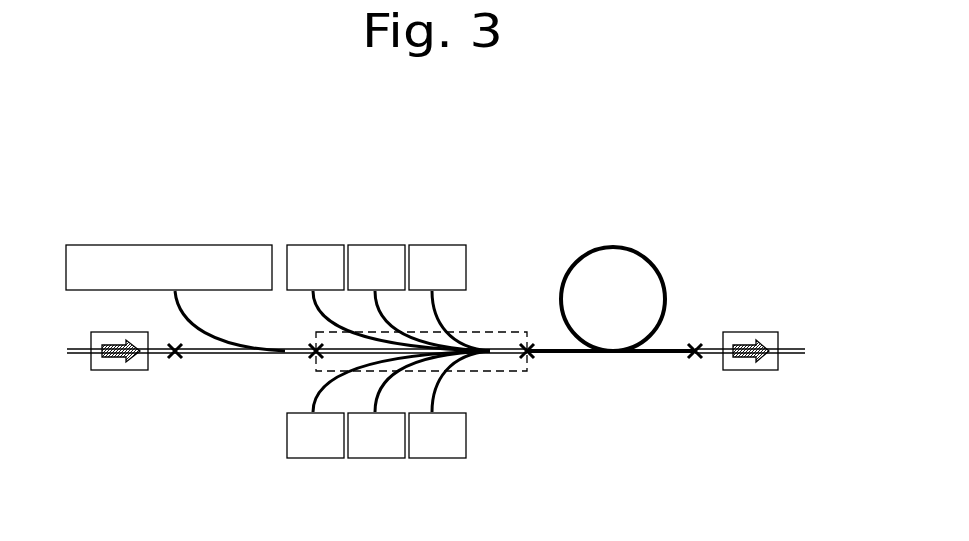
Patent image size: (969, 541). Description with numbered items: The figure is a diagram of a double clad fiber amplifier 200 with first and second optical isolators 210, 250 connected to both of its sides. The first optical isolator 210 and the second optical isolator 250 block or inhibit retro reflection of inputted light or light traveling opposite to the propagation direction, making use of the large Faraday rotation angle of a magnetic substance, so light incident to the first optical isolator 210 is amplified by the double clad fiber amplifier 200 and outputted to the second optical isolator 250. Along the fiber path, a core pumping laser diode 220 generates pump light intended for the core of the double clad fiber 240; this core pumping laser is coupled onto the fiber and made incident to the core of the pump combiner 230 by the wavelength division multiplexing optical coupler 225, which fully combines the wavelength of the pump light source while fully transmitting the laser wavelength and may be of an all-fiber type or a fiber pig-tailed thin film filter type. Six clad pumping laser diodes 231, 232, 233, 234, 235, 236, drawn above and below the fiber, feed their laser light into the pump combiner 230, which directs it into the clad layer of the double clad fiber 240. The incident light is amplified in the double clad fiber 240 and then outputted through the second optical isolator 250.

The double clad fiber amplifier 200 is at (777, 175).
The first optical isolator 210 is at (120, 378).
The core pumping laser diode 220 is at (204, 243).
The wavelength division multiplexing optical coupler 225 is at (237, 396).
The pump combiner 230 is at (504, 372).
The clad pumping laser diode 231 is at (313, 243).
The clad pumping laser diode 232 is at (375, 243).
The clad pumping laser diode 233 is at (432, 243).
The clad pumping laser diode 234 is at (313, 460).
The clad pumping laser diode 235 is at (375, 460).
The clad pumping laser diode 236 is at (432, 460).
The double clad fiber 240 is at (656, 267).
The second optical isolator 250 is at (752, 378).